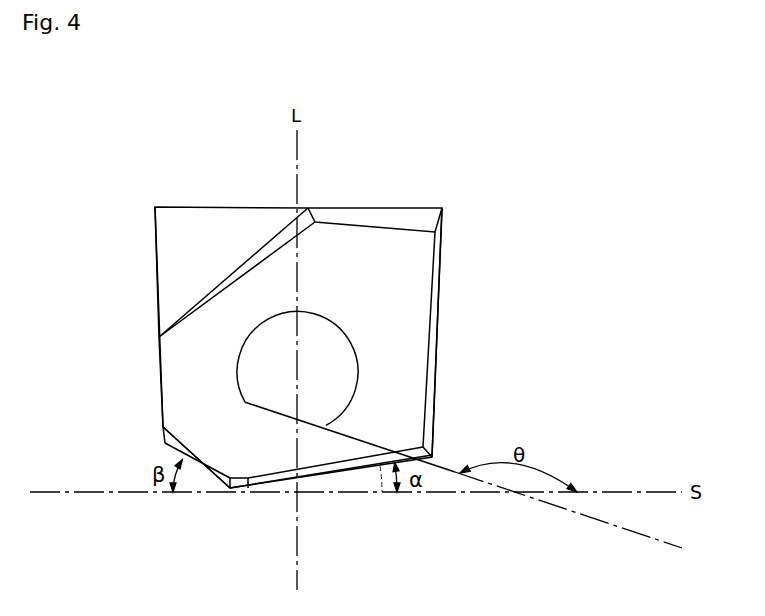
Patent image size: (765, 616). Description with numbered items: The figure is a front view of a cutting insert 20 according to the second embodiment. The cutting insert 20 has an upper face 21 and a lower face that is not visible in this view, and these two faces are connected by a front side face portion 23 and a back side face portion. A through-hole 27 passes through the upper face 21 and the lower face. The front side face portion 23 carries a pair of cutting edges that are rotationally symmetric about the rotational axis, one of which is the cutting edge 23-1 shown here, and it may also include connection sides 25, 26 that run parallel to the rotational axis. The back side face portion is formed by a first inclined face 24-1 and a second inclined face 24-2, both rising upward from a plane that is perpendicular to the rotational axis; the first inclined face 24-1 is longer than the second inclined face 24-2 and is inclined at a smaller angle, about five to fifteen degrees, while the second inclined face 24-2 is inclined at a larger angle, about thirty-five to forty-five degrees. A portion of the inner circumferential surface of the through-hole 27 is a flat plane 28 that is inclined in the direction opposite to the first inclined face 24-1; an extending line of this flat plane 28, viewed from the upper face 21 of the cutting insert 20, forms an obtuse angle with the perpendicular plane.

The cutting insert 20 is at (480, 138).
The upper face 21 is at (412, 251).
The front side face portion 23 is at (253, 182).
The cutting edge 23-1 is at (267, 252).
The first inclined face 24-1 is at (374, 468).
The second inclined face 24-2 is at (168, 445).
The connection side 25 is at (162, 378).
The connection side 26 is at (438, 357).
The through-hole 27 is at (324, 366).
The flat plane 28 is at (305, 419).